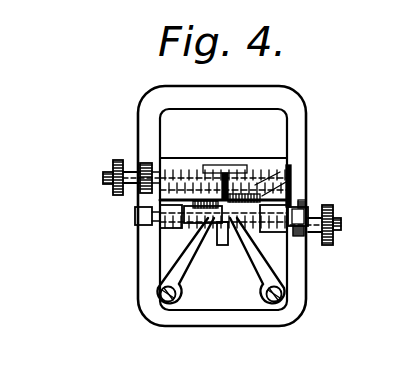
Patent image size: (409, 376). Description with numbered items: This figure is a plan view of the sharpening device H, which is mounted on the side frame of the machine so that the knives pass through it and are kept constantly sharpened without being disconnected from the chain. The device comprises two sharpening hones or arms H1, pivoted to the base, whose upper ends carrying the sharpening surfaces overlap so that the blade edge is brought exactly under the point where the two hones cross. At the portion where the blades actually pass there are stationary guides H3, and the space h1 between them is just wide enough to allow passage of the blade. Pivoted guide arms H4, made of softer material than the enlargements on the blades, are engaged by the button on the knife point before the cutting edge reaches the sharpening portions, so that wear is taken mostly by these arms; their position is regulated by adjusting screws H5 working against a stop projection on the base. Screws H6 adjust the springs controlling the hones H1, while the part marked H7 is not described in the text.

The sharpening device H is at (321, 88).
The sharpening hones H1 is at (260, 198).
The stationary guides H3 is at (333, 272).
The pivoted guide arms H4 is at (337, 302).
The adjusting screws H5 is at (376, 189).
The spring adjusting screws H6 is at (373, 241).
The bottom cross bar H7 is at (286, 311).
The space between guides h1 is at (302, 218).